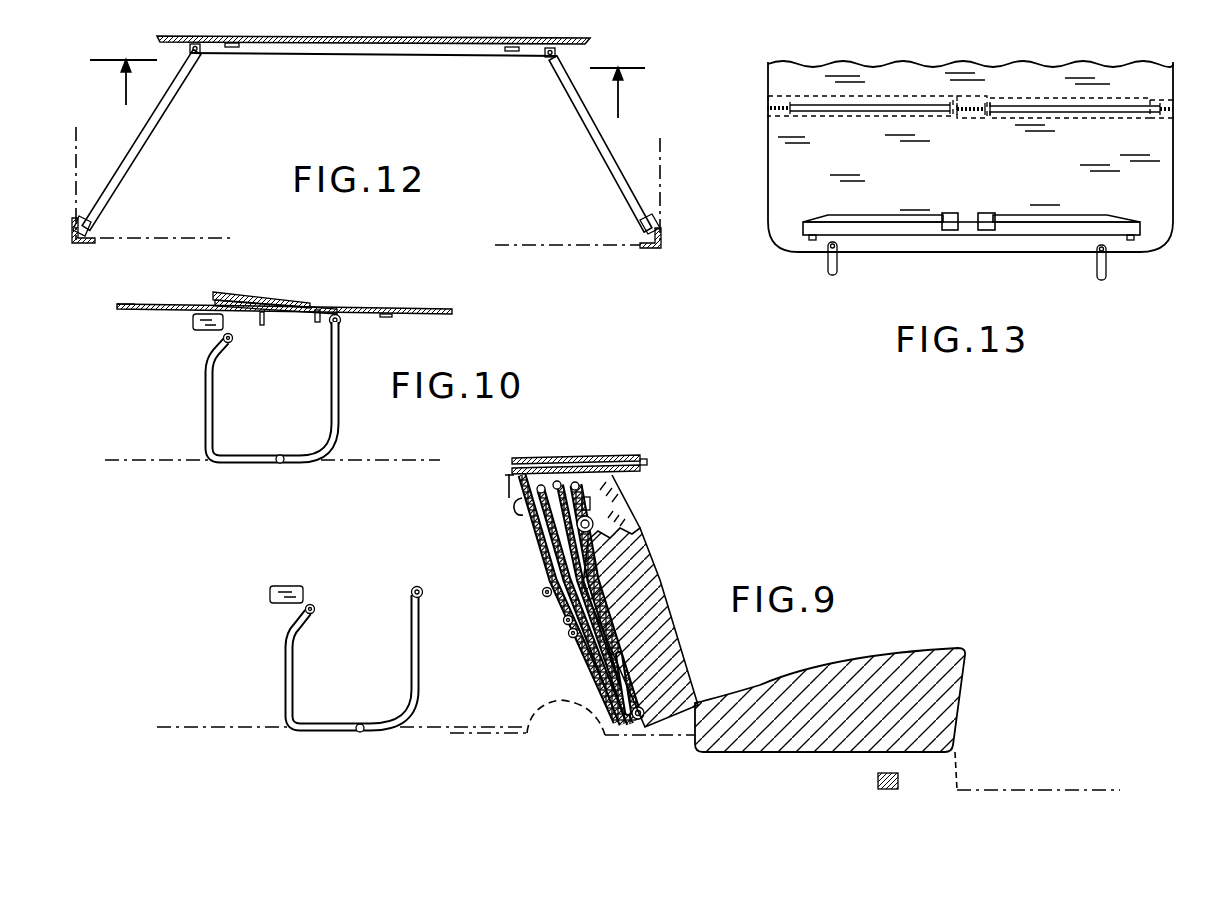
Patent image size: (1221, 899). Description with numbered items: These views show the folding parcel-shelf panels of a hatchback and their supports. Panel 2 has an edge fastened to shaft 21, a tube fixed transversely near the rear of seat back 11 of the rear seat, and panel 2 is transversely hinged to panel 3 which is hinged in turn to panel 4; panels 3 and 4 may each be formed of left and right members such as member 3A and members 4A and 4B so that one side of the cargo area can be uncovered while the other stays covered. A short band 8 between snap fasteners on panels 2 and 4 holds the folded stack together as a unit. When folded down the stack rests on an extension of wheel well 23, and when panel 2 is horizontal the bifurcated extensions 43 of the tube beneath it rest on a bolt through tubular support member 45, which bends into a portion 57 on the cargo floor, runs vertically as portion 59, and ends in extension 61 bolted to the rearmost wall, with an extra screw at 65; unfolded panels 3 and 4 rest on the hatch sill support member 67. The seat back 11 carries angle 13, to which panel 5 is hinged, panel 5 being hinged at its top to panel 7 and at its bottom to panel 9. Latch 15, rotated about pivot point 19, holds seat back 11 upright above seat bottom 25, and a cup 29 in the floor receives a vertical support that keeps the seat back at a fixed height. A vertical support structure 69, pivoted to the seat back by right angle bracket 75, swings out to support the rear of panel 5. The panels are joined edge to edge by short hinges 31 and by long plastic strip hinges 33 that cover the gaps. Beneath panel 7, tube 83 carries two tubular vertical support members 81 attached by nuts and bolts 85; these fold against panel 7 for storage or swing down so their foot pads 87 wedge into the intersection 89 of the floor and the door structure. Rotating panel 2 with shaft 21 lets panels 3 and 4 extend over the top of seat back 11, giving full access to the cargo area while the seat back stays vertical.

In FIG. 10, the panel 2 is at (383, 304).
In FIG. 9, the panel 2 is at (530, 530).
In FIG. 9, the panel 3 is at (628, 475).
In FIG. 10, the left member of panel 3 3A is at (283, 297).
In FIG. 9, the panel 4 is at (538, 458).
In FIG. 10, the left member of panel 4 4A is at (285, 312).
In FIG. 10, the right member of panel 4 4B is at (115, 311).
In FIG. 13, the panel 5 is at (907, 82).
In FIG. 12, the panel 7 is at (590, 42).
In FIG. 13, the panel 7 is at (1046, 171).
In FIG. 9, the panel 7 is at (553, 550).
In FIG. 13, the band 8 is at (834, 262).
In FIG. 10, the band 8 is at (263, 326).
In FIG. 9, the panel 9 is at (596, 660).
In FIG. 9, the seat back 11 is at (683, 672).
In FIG. 12, the angle 13 is at (369, 88).
In FIG. 9, the latch 15 is at (594, 514).
In FIG. 9, the pivot point 19 is at (584, 497).
In FIG. 9, the shaft 21 is at (543, 593).
In FIG. 9, the wheel well 23 is at (525, 727).
In FIG. 9, the seat bottom 25 is at (945, 688).
In FIG. 9, the cup 29 is at (876, 783).
In FIG. 13, the short hinges 31 is at (765, 100).
In FIG. 13, the plastic strip hinges 33 is at (843, 116).
In FIG. 10, the bifurcated extensions 43 is at (341, 320).
In FIG. 9, the bifurcated extensions 43 is at (511, 512).
In FIG. 10, the tubular support member 45 is at (330, 403).
In FIG. 10, the floor portion 57 is at (245, 465).
In FIG. 10, the vertical portion 59 is at (205, 403).
In FIG. 10, the extension 61 is at (220, 348).
In FIG. 10, the bolt or sheet metal screw location 65 is at (280, 465).
In FIG. 10, the support member 67 is at (195, 326).
In FIG. 9, the vertical support structure 69 is at (624, 678).
In FIG. 9, the right angle bracket 75 is at (641, 720).
In FIG. 12, the vertical support members 81 is at (158, 115).
In FIG. 13, the vertical support members 81 is at (872, 216).
In FIG. 9, the vertical support members 81 is at (564, 620).
In FIG. 12, the tube 83 is at (460, 57).
In FIG. 13, the tube 83 is at (1008, 233).
In FIG. 9, the tube 83 is at (569, 635).
In FIG. 13, the nuts and bolts 85 is at (812, 218).
In FIG. 12, the foot pads 87 is at (92, 222).
In FIG. 13, the foot pads 87 is at (945, 213).
In FIG. 12, the intersection 89 is at (82, 240).